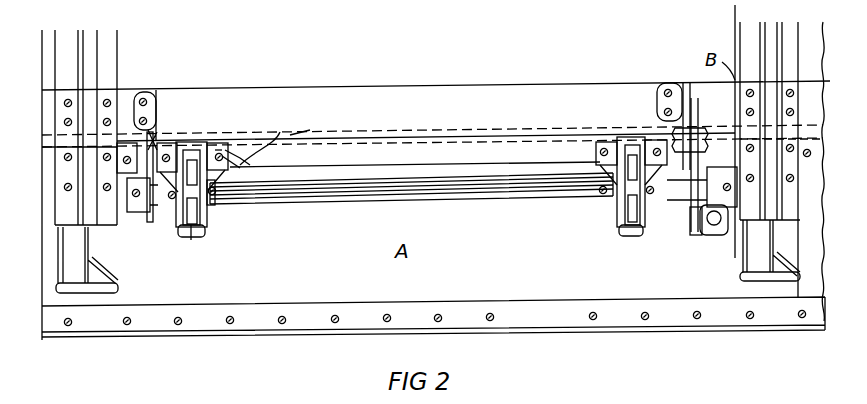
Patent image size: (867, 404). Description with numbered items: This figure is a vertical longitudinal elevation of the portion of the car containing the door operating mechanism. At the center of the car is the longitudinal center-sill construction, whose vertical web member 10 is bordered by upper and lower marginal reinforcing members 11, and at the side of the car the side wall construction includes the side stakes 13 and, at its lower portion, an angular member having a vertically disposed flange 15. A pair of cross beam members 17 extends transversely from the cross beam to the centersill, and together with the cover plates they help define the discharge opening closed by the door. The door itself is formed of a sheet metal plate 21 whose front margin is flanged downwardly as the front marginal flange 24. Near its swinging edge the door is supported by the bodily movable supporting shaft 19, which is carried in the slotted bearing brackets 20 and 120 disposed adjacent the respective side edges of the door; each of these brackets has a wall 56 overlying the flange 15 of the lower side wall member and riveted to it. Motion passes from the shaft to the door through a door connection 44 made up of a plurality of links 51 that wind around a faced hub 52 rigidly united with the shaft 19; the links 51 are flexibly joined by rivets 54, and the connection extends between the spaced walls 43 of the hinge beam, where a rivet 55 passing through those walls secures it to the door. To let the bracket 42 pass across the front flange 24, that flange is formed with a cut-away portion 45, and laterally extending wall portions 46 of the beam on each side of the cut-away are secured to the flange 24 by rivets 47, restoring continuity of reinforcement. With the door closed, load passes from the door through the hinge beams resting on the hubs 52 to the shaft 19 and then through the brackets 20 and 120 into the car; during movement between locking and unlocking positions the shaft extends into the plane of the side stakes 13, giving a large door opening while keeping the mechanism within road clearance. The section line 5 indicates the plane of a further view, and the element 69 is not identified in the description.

The section line 5- 5 is at (700, 15).
The vertical web member 10 is at (514, 243).
The marginal reinforcing member 11 is at (530, 300).
The side stake 13 is at (108, 38).
The vertically disposed flange 15 is at (485, 84).
The cross beam member 17 is at (88, 262).
The bodily movable supporting shaft 19 is at (535, 195).
The slotted bearing bracket 20 is at (156, 90).
The sheet metal plate 21 is at (430, 130).
The front marginal flange 24 is at (350, 150).
The bracket 42 is at (228, 155).
The spaced wall 43 is at (160, 213).
The door connection 44 is at (180, 215).
The cut-away portion 45 is at (214, 152).
The laterally extending wall portion 46 is at (272, 132).
The rivet 47 is at (224, 156).
The link 51 is at (205, 228).
The hub 52 is at (215, 215).
The rivet 54 is at (183, 237).
The rivet 55 is at (292, 134).
The wall 56 is at (140, 92).
The bearing block 69 is at (130, 218).
The slotted bearing bracket 120 is at (660, 128).